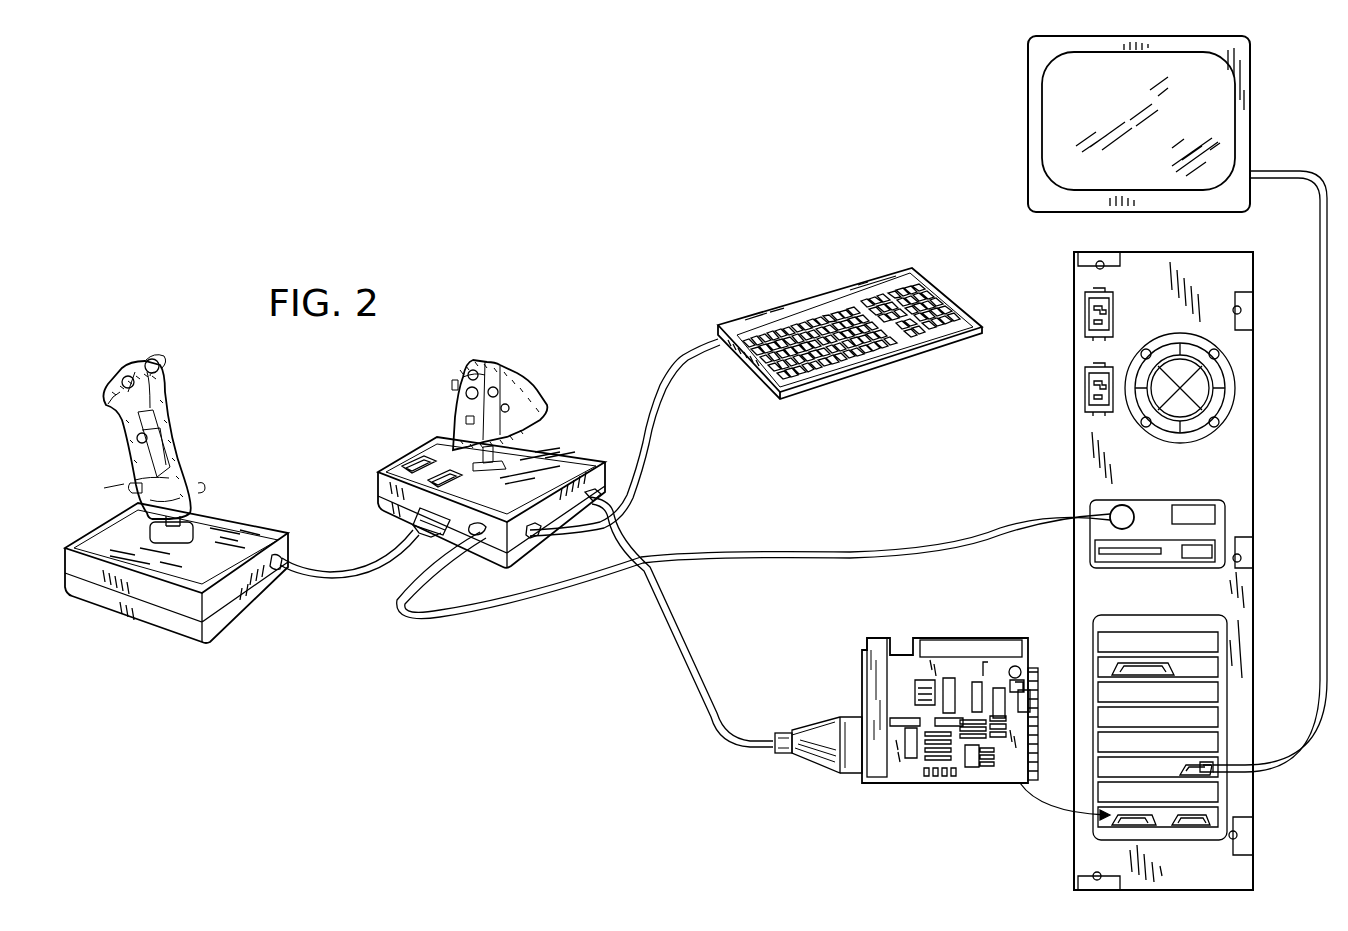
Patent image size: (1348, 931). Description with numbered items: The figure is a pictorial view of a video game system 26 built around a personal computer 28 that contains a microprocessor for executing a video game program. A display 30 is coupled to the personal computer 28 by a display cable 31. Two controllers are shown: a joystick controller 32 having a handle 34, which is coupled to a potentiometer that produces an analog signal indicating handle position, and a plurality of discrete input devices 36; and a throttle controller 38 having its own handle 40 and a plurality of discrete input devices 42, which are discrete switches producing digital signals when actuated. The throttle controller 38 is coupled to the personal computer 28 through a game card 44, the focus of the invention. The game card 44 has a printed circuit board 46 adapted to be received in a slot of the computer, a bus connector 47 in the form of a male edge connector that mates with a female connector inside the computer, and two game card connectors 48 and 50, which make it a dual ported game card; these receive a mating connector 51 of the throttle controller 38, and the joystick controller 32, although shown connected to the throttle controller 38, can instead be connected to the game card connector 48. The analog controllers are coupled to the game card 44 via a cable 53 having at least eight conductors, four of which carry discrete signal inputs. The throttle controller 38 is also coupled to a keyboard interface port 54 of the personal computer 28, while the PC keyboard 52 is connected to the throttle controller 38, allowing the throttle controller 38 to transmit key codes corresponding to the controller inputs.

The video game system 26 is at (549, 782).
The personal computer 28 is at (1115, 571).
The display 30 is at (1250, 75).
The display cable 31 is at (1288, 758).
The joystick controller 32 is at (240, 509).
The handle 34 is at (187, 447).
The discrete input devices 36 is at (132, 487).
The throttle controller 38 is at (574, 446).
The handle 40 is at (530, 400).
The discrete input devices 42 is at (502, 404).
The game card 44 is at (946, 722).
The printed circuit board 46 is at (955, 640).
The bus connector 47 is at (1033, 668).
The game card connector 48 is at (860, 678).
The game card connector 50 is at (857, 750).
The mating connector 51 is at (808, 760).
The PC keyboard 52 is at (814, 292).
The cable 53 is at (685, 657).
The keyboard interface port 54 is at (1112, 512).